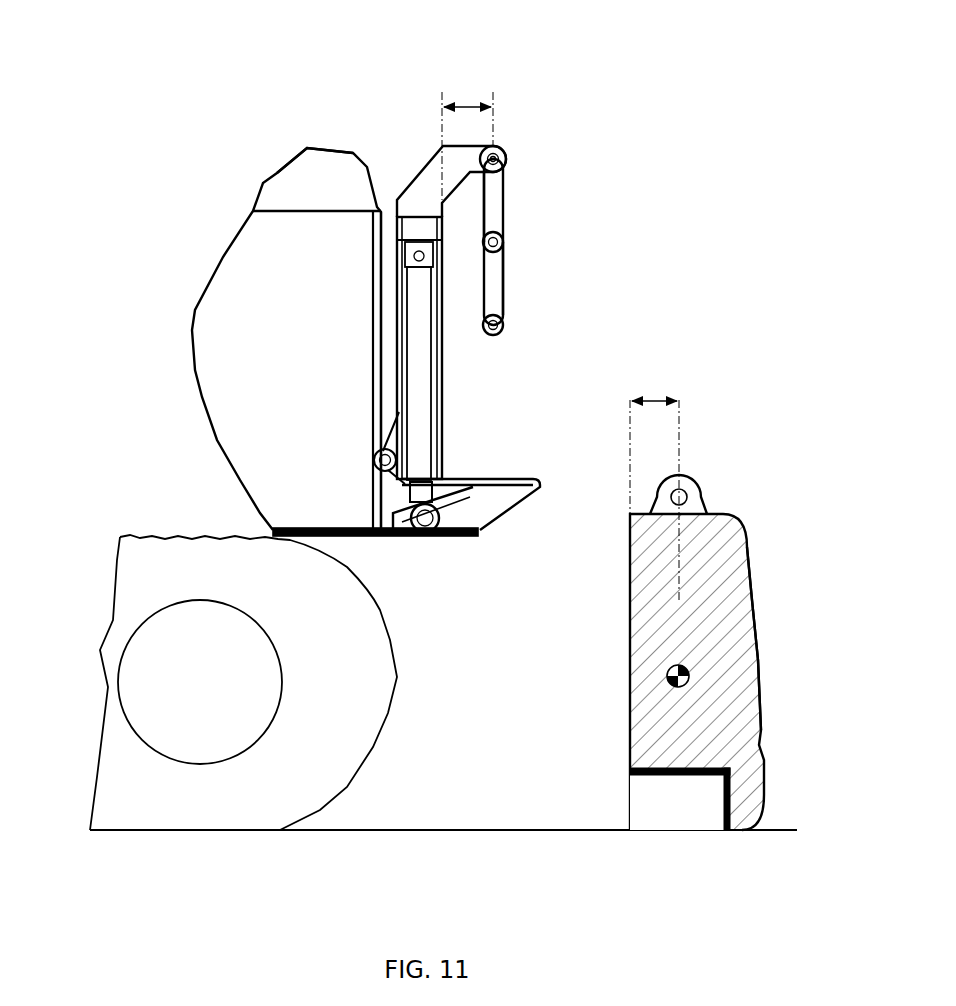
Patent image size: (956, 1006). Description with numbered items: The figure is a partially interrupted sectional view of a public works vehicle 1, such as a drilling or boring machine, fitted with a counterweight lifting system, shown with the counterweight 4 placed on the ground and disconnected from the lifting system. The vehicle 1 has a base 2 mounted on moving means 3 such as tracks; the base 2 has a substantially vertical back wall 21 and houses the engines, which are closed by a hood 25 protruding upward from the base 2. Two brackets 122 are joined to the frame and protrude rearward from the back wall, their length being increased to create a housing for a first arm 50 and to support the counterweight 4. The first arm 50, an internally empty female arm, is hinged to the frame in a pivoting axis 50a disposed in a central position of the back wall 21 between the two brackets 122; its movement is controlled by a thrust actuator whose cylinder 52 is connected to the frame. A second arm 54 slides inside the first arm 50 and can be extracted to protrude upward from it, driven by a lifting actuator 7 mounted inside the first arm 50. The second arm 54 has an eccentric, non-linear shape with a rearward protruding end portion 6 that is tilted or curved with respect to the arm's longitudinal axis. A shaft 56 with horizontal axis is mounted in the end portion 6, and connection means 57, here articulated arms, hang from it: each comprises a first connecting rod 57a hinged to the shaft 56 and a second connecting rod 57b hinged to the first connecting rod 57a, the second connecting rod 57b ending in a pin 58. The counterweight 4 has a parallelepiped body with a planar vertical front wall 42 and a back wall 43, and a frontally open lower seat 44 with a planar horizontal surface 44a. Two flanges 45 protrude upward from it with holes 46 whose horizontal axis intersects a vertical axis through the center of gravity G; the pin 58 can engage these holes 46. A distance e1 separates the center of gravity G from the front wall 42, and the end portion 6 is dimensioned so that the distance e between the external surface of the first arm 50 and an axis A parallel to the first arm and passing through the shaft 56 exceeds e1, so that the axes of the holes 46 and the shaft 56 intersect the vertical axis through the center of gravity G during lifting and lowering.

The public works vehicle 1 is at (245, 150).
The base 2 is at (257, 292).
The moving means 3 is at (148, 537).
The counterweight 4 is at (665, 634).
The end portion 6 is at (429, 275).
The lifting actuator 7 is at (405, 327).
The back wall 21 is at (388, 285).
The hood 25 is at (312, 173).
The front wall 42 is at (630, 687).
The back wall 43 is at (758, 612).
The lower seat 44 is at (725, 803).
The planar horizontal surface 44a is at (668, 777).
The flanges 45 is at (693, 507).
The holes 46 is at (683, 492).
The first arm 50 is at (297, 350).
The pivoting axis 50a is at (375, 457).
The cylinder 52 is at (447, 495).
The second arm 54 is at (392, 212).
The shaft 56 is at (508, 157).
The connection means 57 is at (553, 223).
The first connecting rod 57a is at (494, 197).
The second connecting rod 57b is at (494, 290).
The pin 58 is at (500, 325).
The brackets 122 is at (477, 532).
The axis A is at (493, 97).
The center of gravity G is at (690, 682).
The distance e is at (467, 136).
The distance e1 is at (654, 481).